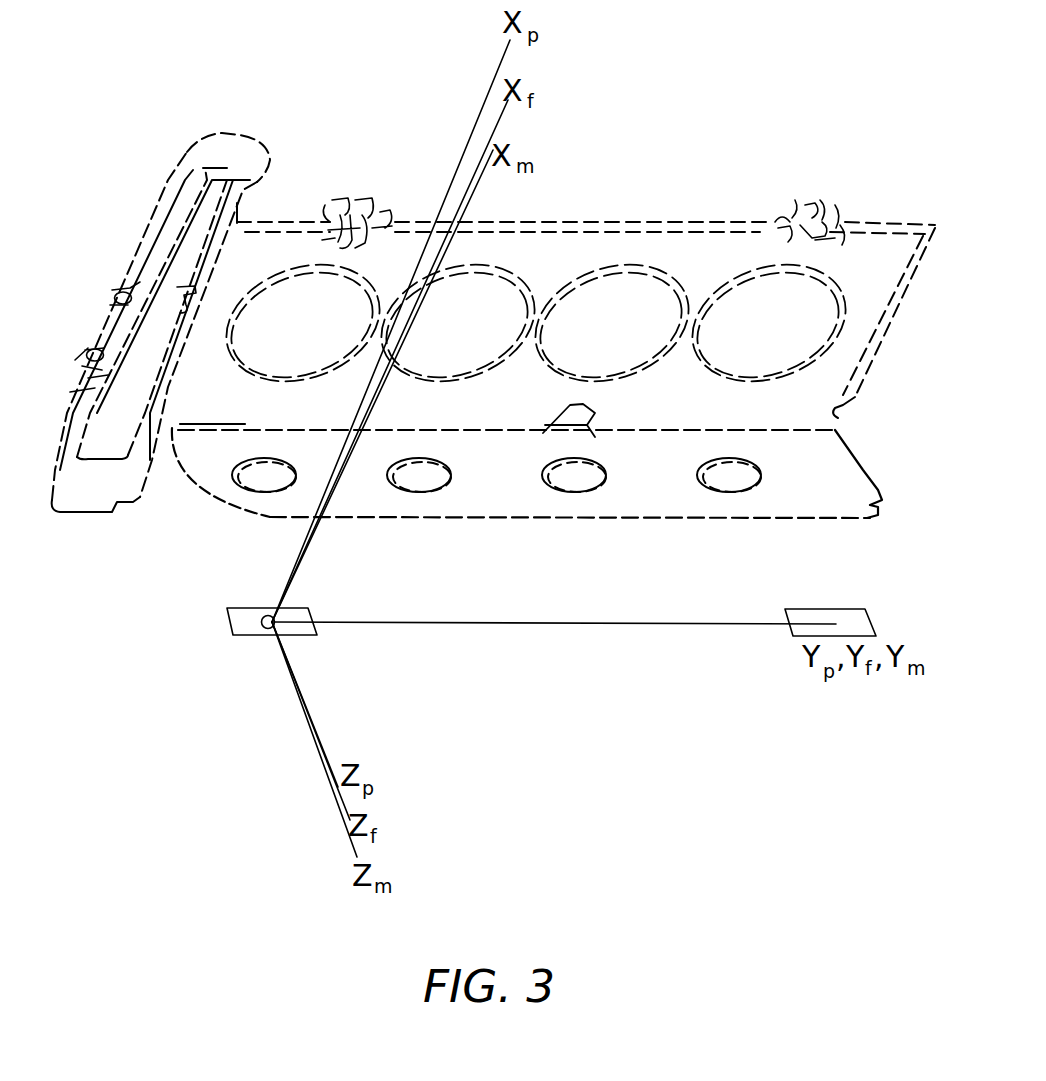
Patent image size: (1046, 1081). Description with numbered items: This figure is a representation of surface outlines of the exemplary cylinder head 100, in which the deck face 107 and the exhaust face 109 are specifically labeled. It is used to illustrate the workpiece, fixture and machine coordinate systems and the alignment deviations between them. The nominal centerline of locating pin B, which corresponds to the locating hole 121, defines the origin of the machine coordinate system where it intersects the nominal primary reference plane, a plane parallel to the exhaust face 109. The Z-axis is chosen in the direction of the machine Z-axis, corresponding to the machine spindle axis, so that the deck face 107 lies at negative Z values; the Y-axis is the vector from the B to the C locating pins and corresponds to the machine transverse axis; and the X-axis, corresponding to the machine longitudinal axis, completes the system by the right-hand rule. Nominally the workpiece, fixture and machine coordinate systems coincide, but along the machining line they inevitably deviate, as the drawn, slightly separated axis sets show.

The cylinder head 100 is at (680, 112).
The deck face 107 is at (865, 258).
The exhaust face 109 is at (803, 495).
The locating hole 121 is at (260, 618).